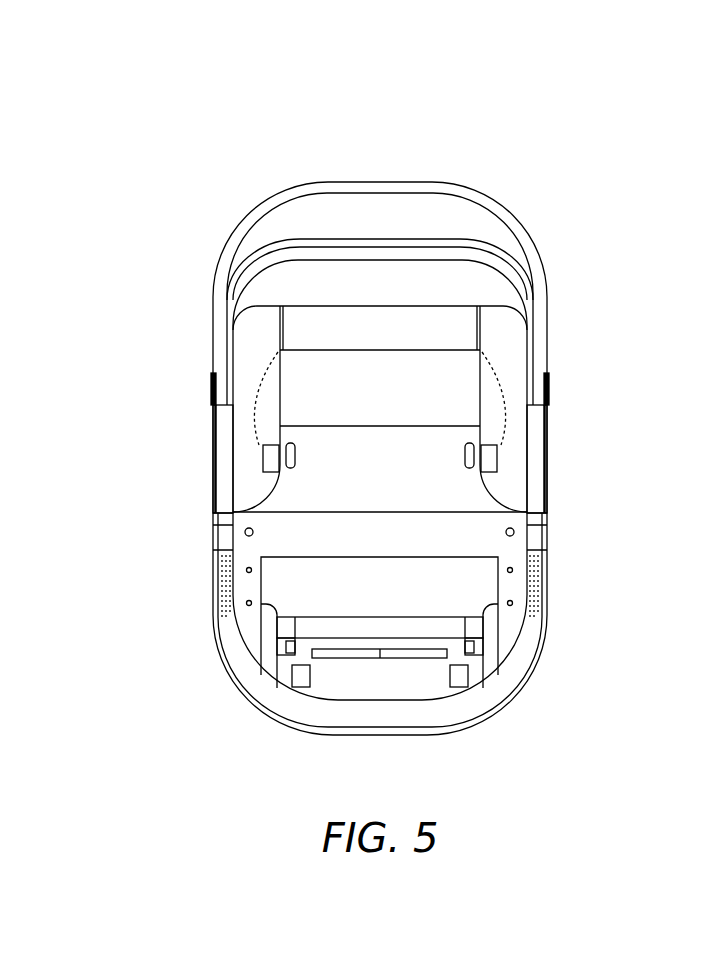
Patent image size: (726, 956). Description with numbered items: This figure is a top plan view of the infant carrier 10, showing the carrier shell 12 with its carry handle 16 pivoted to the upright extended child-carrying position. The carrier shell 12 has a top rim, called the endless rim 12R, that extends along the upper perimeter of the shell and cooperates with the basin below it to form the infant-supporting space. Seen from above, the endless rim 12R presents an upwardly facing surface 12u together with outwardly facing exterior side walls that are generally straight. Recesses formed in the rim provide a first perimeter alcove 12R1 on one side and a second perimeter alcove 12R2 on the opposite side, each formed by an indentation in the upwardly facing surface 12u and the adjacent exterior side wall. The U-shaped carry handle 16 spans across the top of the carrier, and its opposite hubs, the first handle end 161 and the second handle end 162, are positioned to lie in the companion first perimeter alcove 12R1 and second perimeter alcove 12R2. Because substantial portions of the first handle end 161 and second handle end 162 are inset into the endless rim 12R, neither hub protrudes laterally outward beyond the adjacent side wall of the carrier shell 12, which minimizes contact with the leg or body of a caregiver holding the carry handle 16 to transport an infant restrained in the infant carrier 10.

The infant carrier 10 is at (588, 112).
The carrier shell 12 is at (201, 483).
The upwardly facing surface 12u is at (535, 493).
The endless rim 12R is at (293, 88).
The first perimeter alcove 12R1 is at (657, 219).
The second perimeter alcove 12R2 is at (100, 219).
The carry handle 16 is at (480, 173).
The first handle end 161 is at (566, 387).
The second handle end 162 is at (203, 390).